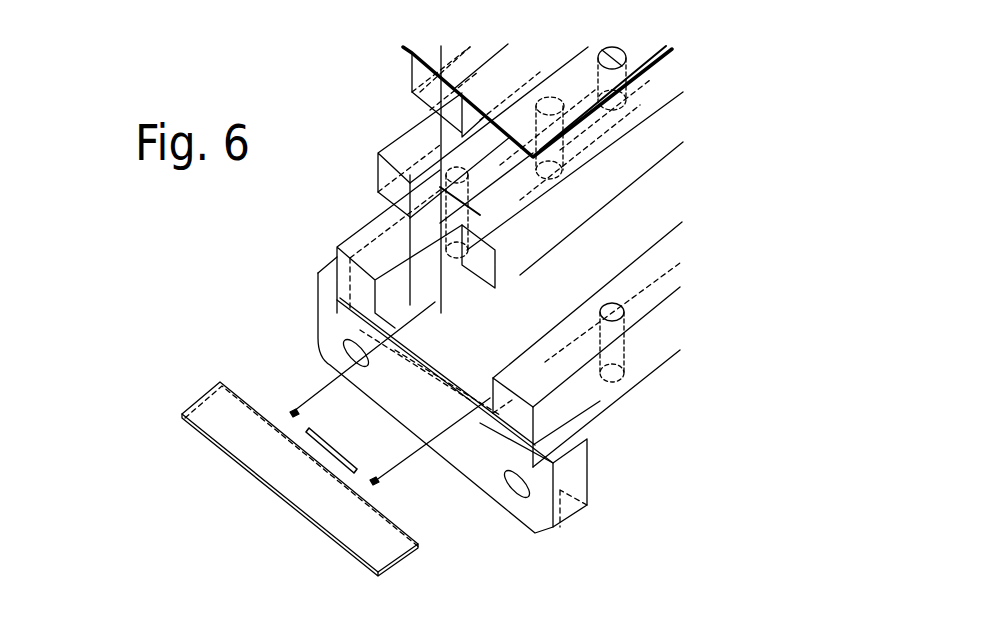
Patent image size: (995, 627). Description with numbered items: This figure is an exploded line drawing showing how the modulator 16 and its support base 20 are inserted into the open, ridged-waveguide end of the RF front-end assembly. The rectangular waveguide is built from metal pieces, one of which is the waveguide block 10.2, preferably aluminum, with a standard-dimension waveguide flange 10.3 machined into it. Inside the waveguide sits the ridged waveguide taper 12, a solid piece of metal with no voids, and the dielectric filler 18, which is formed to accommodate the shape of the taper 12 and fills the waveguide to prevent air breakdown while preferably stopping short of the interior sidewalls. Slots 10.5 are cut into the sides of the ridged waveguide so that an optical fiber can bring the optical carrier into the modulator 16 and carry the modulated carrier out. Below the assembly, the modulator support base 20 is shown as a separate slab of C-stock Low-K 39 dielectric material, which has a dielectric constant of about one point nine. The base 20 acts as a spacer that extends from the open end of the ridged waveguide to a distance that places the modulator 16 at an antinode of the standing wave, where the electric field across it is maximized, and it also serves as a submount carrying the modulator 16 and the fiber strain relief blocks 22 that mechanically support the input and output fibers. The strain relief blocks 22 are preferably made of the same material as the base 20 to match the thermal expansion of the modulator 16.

The ridged waveguide taper 12 is at (418, 75).
The dielectric filler 18 is at (380, 164).
The fiber strain relief blocks 22 is at (291, 413).
The modulator 16 is at (308, 442).
The modulator support base 20 is at (275, 486).
The C-stock Low-K 39 dielectric material 39 is at (290, 521).
The waveguide block 10.2 is at (636, 376).
The waveguide flange 10.3 is at (577, 480).
The slots 10.5 is at (583, 410).